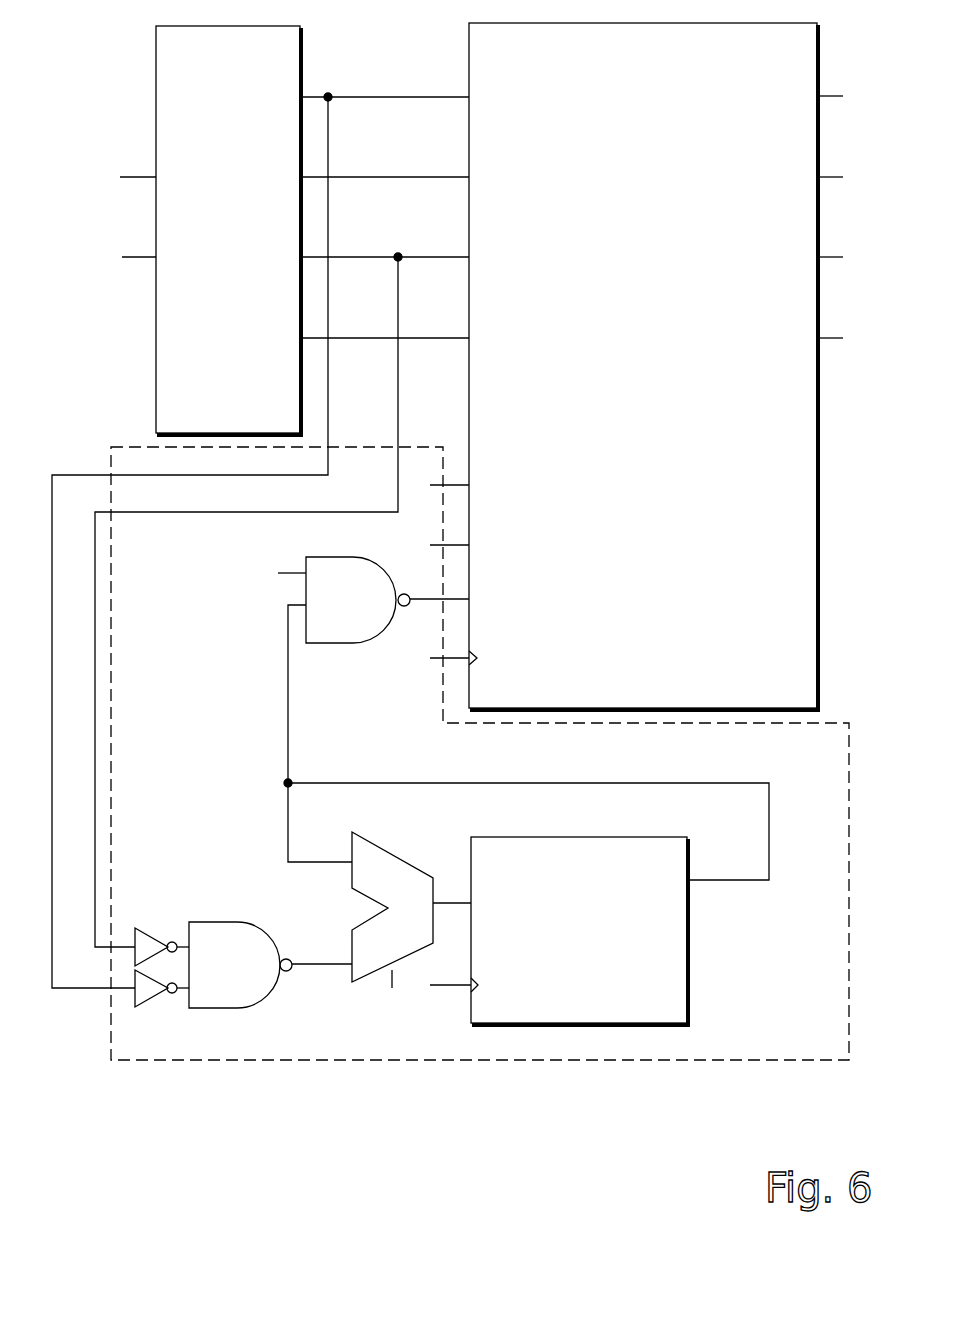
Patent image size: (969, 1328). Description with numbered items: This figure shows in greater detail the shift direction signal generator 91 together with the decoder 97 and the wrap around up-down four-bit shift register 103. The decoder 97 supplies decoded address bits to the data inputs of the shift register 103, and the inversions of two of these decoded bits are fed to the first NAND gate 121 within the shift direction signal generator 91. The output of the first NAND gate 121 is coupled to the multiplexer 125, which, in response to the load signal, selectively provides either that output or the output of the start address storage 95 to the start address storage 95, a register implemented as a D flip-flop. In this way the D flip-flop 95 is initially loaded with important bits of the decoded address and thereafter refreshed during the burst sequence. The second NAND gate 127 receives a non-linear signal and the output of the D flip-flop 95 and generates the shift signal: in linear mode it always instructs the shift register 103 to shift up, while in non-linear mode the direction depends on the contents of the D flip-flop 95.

The decoder 97 is at (213, 254).
The wrap around up-down 4-bit shift register 103 is at (622, 467).
The second NAND gate 127 is at (322, 614).
The multiplexer 125 is at (376, 897).
The first NAND gate 121 is at (209, 974).
The start address storage 95 is at (564, 954).
The shift direction signal generator 91 is at (786, 1029).